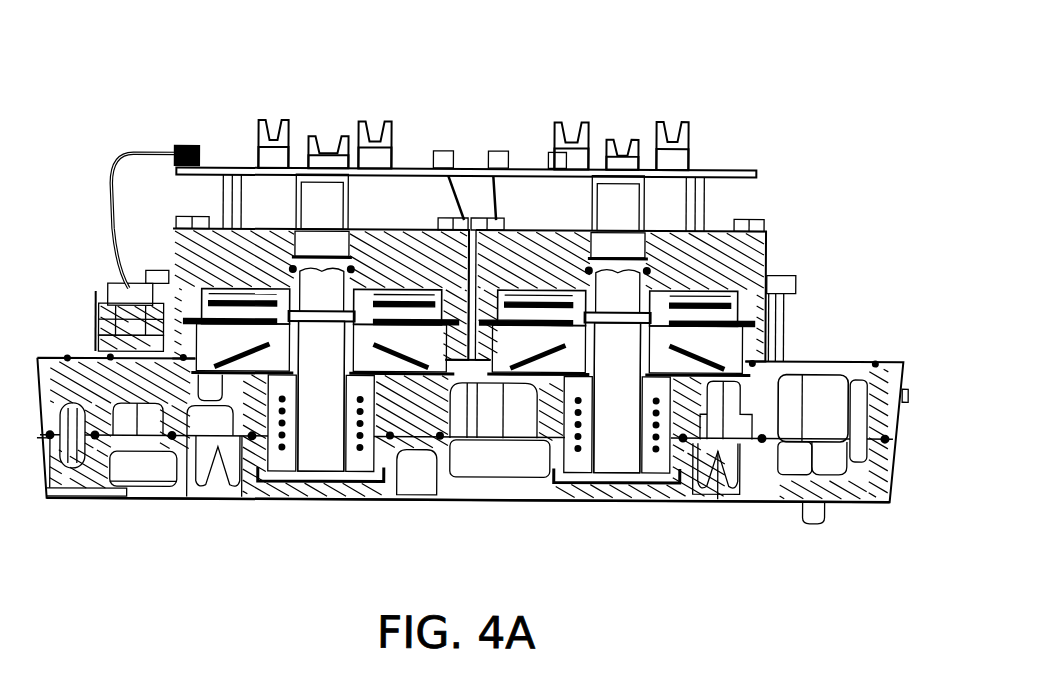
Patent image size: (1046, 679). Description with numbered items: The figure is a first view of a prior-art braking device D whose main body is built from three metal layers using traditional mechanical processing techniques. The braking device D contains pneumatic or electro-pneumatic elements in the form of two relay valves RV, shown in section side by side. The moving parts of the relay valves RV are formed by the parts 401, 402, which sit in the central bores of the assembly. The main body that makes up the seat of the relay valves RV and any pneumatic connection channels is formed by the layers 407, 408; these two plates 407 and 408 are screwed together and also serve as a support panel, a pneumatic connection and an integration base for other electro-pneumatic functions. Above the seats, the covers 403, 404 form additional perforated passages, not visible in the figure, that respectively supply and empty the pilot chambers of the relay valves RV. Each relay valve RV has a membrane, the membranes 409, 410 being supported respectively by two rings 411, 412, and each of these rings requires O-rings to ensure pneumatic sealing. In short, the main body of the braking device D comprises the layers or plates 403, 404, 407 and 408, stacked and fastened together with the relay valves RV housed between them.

The moving part 401 is at (537, 283).
The moving part 402 is at (583, 500).
The cover 403 is at (385, 255).
The cover 404 is at (765, 243).
The layer 407 is at (48, 355).
The layer 408 is at (53, 503).
The membrane 409 is at (158, 295).
The membrane 410 is at (784, 310).
The ring 411 is at (115, 287).
The ring 412 is at (735, 503).
The relay valve RV is at (300, 295).
The braking device D is at (777, 143).